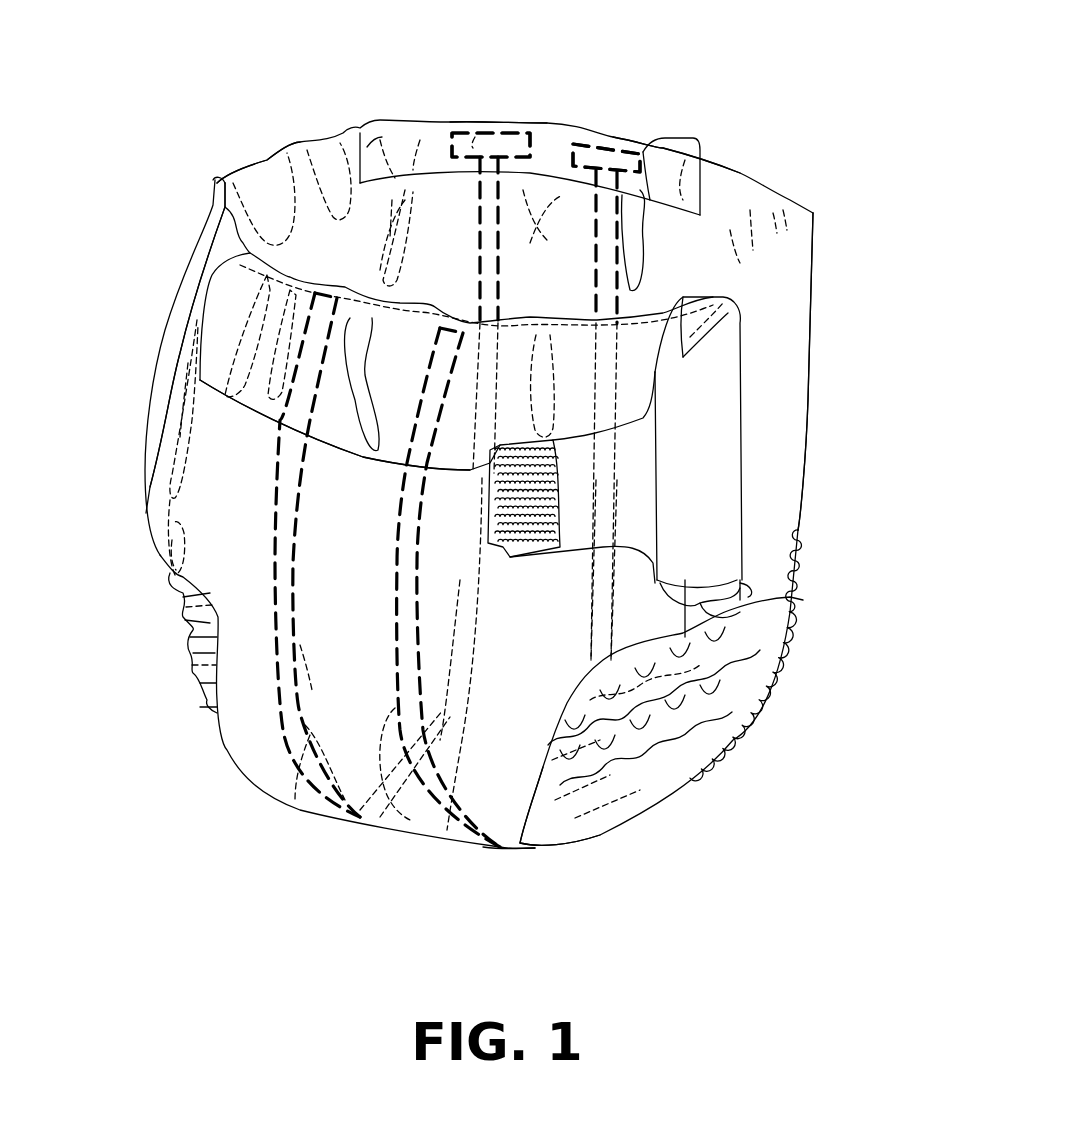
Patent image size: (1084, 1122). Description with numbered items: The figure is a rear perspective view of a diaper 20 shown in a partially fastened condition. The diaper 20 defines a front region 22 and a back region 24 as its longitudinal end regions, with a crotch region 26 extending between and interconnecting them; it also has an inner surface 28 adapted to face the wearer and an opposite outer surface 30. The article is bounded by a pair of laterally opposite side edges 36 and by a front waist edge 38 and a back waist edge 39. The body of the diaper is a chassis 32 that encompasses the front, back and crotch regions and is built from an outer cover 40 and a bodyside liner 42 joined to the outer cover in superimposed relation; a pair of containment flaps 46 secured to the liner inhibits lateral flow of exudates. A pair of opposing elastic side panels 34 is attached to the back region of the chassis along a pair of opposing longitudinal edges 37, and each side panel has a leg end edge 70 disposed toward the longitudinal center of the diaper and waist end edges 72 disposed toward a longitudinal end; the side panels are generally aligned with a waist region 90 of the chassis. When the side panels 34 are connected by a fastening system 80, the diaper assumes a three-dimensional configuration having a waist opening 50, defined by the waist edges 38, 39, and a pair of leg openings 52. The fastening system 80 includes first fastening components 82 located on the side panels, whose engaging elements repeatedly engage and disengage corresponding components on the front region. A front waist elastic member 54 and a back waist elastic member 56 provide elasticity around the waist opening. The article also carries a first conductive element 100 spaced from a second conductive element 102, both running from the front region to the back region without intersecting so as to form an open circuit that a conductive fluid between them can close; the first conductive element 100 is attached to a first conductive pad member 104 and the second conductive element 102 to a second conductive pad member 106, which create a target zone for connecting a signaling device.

The diaper 20 is at (200, 135).
The front region 22 is at (838, 358).
The back region 24 is at (372, 620).
The crotch region 26 is at (522, 830).
The inner surface 28 is at (578, 285).
The outer surface 30 is at (300, 527).
The chassis 32 is at (198, 407).
The elastic side panels 34 is at (213, 197).
The side edges 36 is at (210, 713).
The longitudinal edges 37 is at (187, 298).
The front waist edge 38 is at (605, 130).
The back waist edge 39 is at (422, 297).
The outer cover 40 is at (283, 722).
The bodyside liner 42 is at (650, 148).
The containment flaps 46 is at (733, 667).
The waist opening 50 is at (418, 85).
The leg openings 52 is at (670, 768).
The front waist elastic member 54 is at (455, 122).
The back waist elastic member 56 is at (330, 420).
The leg end edge 70 is at (602, 627).
The waist end edges 72 is at (685, 357).
The fastening system 80 is at (842, 443).
The first fastening components 82 is at (510, 558).
The waist region 90 is at (258, 434).
The first conductive element 100 is at (322, 702).
The second conductive element 102 is at (470, 737).
The first conductive pad member 104 is at (520, 128).
The second conductive pad member 106 is at (640, 130).